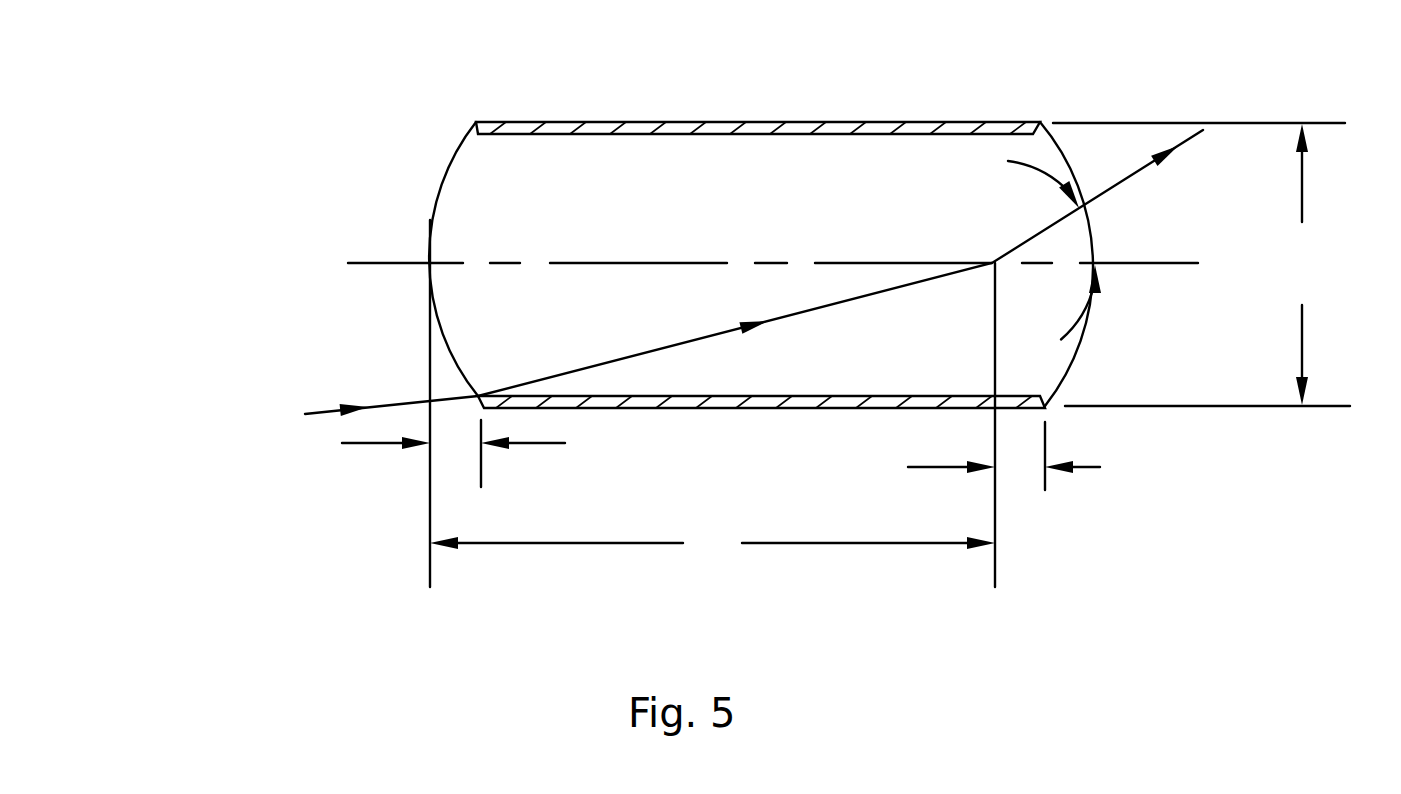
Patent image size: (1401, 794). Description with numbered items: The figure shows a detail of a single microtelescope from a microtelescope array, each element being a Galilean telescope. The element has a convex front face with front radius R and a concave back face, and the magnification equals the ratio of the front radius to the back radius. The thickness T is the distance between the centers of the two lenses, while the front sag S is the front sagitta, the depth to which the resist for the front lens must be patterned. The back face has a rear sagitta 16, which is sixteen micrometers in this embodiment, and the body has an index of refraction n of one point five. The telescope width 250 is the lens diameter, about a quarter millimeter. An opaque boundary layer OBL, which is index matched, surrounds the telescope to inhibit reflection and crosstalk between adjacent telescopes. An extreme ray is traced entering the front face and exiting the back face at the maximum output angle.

The front radius R is at (426, 218).
The opaque boundary layer OBL is at (925, 99).
The index of refraction n is at (632, 196).
The extreme ray is at (654, 303).
The telescope width 250 is at (1211, 264).
The front sag S is at (475, 453).
The thickness T is at (712, 546).
The rear sagitta 16 is at (1086, 456).